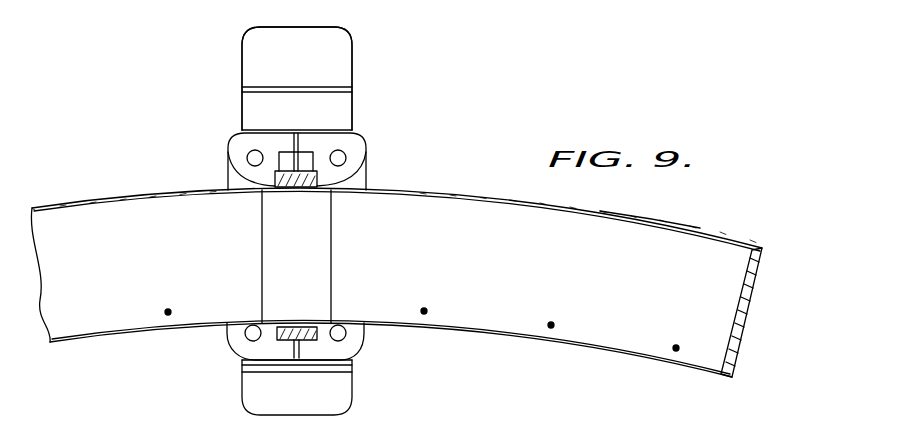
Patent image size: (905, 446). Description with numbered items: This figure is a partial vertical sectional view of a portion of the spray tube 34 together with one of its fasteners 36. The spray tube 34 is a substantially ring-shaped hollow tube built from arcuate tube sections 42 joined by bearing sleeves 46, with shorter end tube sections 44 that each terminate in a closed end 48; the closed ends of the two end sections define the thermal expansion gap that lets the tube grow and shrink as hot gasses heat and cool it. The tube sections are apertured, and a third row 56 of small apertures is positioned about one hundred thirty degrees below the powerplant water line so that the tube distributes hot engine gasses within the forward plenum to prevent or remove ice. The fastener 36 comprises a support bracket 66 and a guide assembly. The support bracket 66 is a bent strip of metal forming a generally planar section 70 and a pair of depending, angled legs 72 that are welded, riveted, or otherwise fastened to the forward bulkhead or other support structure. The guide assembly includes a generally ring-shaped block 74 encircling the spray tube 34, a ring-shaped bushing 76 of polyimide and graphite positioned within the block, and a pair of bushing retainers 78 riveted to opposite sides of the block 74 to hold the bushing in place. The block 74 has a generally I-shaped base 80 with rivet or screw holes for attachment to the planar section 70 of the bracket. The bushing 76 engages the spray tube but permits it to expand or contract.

The spray tube 34 is at (125, 196).
The fastener 36 is at (292, 216).
The arcuate tube section 42 is at (67, 206).
The end tube section 44 is at (665, 223).
The bearing sleeve 46 is at (320, 245).
The closed end 48 is at (745, 308).
The third row of apertures 56 is at (551, 325).
The support bracket 66 is at (292, 103).
The planar section 70 is at (360, 184).
The leg 72 is at (252, 62).
The block 74 is at (305, 340).
The bushing 76 is at (290, 327).
The bushing retainer 78 is at (262, 180).
The I-shaped base 80 is at (248, 143).